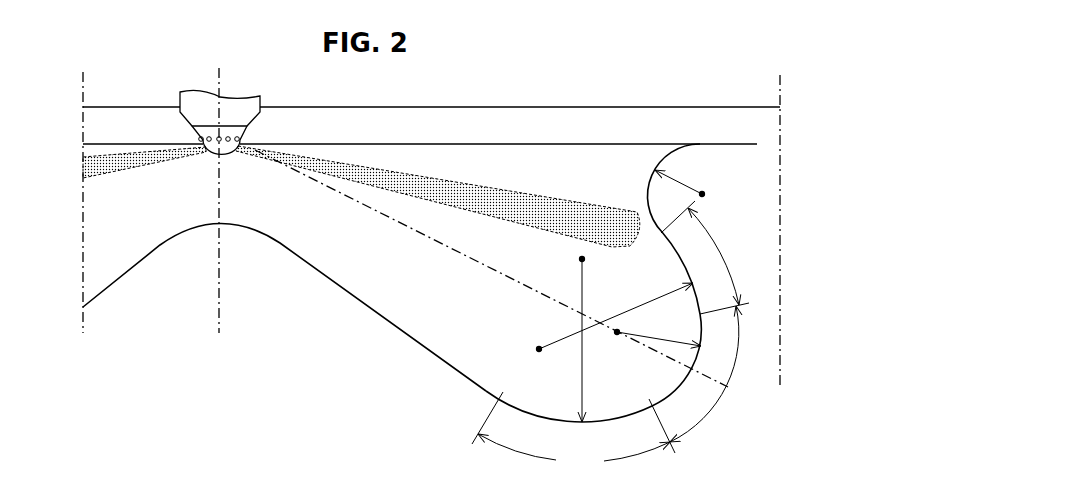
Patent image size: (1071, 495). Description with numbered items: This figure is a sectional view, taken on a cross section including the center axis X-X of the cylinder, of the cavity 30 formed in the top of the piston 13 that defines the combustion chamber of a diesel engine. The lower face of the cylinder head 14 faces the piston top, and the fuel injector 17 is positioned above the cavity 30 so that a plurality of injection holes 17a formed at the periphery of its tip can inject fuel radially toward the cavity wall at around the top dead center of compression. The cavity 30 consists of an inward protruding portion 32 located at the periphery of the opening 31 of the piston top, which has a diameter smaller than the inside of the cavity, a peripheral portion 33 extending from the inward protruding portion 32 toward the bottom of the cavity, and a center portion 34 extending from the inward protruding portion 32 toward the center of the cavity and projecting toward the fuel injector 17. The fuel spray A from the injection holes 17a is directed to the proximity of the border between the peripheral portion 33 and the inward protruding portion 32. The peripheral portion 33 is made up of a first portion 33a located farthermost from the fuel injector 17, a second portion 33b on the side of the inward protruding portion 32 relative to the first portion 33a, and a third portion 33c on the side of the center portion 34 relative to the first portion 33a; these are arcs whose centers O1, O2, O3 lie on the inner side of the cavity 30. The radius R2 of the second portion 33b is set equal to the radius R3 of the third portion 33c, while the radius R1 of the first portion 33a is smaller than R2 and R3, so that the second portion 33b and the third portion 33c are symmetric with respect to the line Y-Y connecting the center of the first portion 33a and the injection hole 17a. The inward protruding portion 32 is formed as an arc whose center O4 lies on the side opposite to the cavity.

The piston 13 is at (757, 144).
The cylinder head 14 is at (753, 107).
The fuel injector 17 is at (240, 110).
The injection holes 17a is at (224, 148).
The cavity 30 is at (441, 303).
The opening 31 is at (490, 138).
The inward protruding portion 32 is at (648, 183).
The peripheral portion 33 is at (542, 418).
The first portion 33a is at (709, 372).
The second portion 33b is at (701, 253).
The third portion 33c is at (573, 430).
The center portion 34 is at (348, 293).
The fuel spray A is at (523, 193).
The center axis of the cylinder X is at (153, 205).
The line Y- Y is at (508, 238).
The center of the arc of the first portion O1 is at (612, 346).
The center of the arc of the second portion O2 is at (530, 338).
The center of the arc of the third portion O3 is at (565, 261).
The center of the arc of the inward protruding portion O4 is at (694, 186).
The radius of the first portion R1 is at (659, 332).
The radius of the arc of the second portion R2 is at (616, 309).
The radius of the arc of the third portion R3 is at (594, 340).